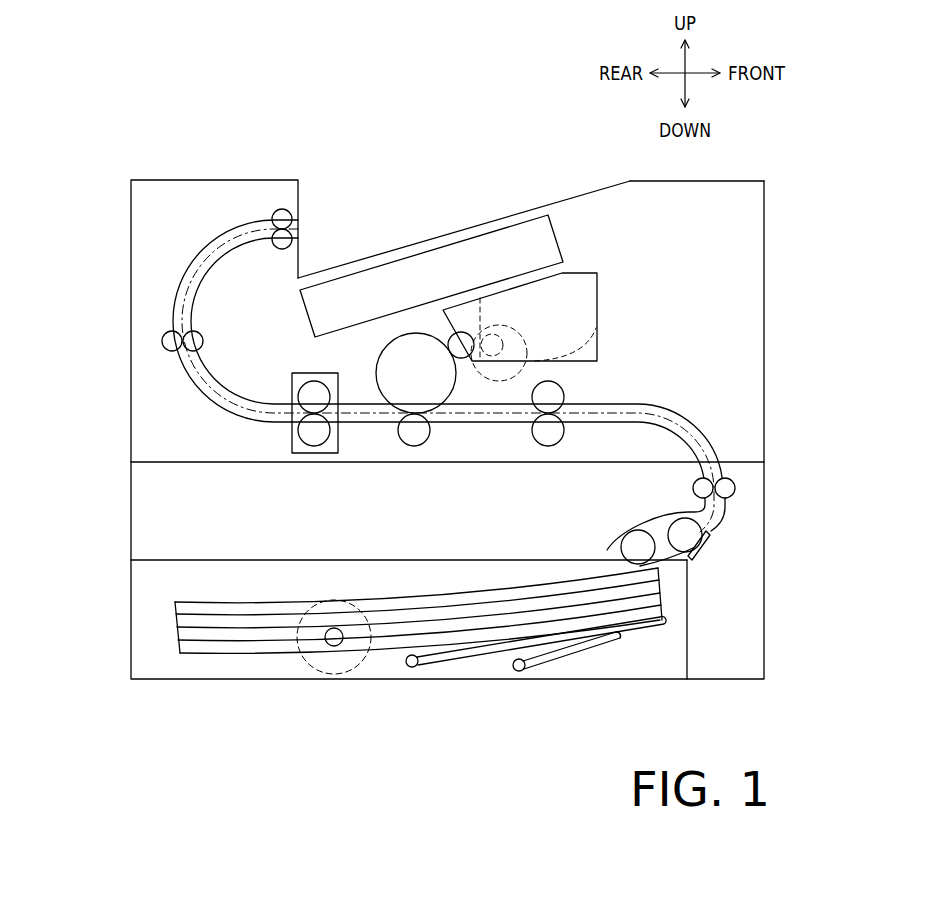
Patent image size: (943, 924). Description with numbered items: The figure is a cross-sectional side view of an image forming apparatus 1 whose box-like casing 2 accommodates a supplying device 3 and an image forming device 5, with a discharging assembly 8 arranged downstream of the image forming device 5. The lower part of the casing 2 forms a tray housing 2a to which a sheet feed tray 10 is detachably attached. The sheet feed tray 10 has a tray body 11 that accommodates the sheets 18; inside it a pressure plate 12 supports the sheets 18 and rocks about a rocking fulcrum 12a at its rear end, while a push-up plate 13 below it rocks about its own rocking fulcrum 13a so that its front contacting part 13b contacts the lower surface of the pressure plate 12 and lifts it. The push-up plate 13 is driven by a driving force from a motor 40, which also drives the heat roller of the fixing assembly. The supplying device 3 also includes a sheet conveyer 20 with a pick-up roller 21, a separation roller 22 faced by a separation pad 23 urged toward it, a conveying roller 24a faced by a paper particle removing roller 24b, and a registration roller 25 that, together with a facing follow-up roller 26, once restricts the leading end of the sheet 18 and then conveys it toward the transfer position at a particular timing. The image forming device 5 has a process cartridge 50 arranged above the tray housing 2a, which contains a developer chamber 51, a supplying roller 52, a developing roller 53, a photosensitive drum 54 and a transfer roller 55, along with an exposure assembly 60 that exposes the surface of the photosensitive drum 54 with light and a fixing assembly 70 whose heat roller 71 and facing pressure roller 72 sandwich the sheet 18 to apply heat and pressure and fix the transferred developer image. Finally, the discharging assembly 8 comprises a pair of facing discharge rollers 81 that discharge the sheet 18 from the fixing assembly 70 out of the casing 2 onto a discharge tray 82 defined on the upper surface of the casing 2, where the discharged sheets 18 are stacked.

The image forming apparatus 1 is at (150, 136).
The casing 2 is at (131, 390).
The tray housing 2a is at (236, 523).
The supplying device 3 is at (379, 548).
The image forming device 5 is at (368, 453).
The discharging assembly 8 is at (375, 174).
The sheet feed tray 10 is at (129, 630).
The tray body 11 is at (188, 591).
The pressure plate 12 is at (478, 652).
The rocking fulcrum 12a is at (412, 668).
The push-up plate 13 is at (570, 671).
The rocking fulcrum 13a is at (519, 672).
The contacting part 13b is at (621, 640).
The sheets 18 is at (234, 601).
The sheet conveyer 20 is at (727, 537).
The pick-up roller 21 is at (625, 537).
The separation roller 22 is at (672, 522).
The separation pad 23 is at (706, 546).
The conveying roller 24a is at (693, 490).
The paper particle removing roller 24b is at (735, 489).
The registration roller 25 is at (565, 434).
The follow-up roller 26 is at (565, 394).
The motor 40 is at (302, 676).
The process cartridge 50 is at (607, 299).
The developer chamber 51 is at (541, 326).
The supplying roller 52 is at (501, 373).
The developing roller 53 is at (448, 336).
The photosensitive drum 54 is at (455, 382).
The transfer roller 55 is at (430, 434).
The exposure assembly 60 is at (413, 290).
The fixing assembly 70 is at (277, 391).
The heat roller 71 is at (306, 384).
The pressure roller 72 is at (299, 432).
The discharge rollers 81 is at (292, 239).
The discharge tray 82 is at (398, 248).